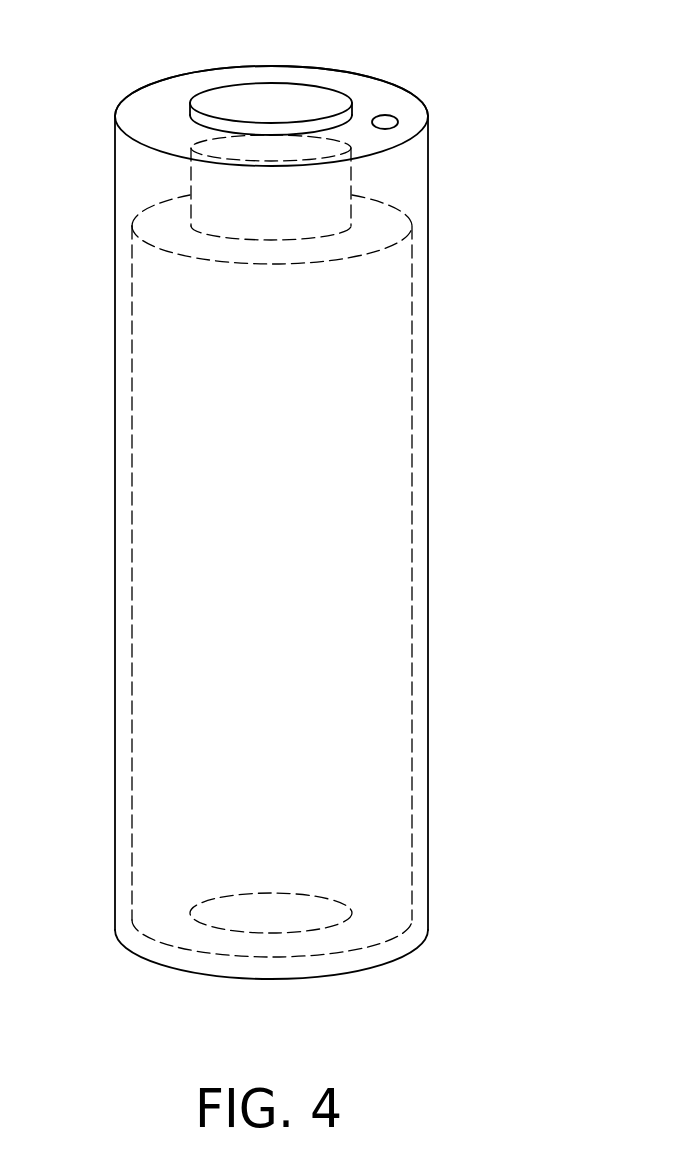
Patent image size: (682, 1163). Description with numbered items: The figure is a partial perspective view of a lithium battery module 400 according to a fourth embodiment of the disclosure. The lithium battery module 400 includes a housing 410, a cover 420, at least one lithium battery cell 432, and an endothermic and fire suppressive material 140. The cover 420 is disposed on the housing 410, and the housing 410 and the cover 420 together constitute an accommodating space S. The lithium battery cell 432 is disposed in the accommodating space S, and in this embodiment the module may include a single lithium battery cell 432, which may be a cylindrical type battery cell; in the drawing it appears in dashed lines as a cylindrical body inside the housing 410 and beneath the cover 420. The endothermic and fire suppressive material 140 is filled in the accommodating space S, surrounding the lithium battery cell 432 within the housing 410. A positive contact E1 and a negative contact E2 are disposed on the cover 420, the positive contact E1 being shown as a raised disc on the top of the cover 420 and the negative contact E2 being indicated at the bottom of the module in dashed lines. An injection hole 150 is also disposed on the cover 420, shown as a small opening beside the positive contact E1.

The lithium battery module 400 is at (575, 1016).
The housing 410 is at (428, 513).
The cover 420 is at (158, 108).
The lithium battery cell 432 is at (388, 560).
The endothermic and fire suppressive material 140 is at (415, 372).
The injection hole 150 is at (385, 115).
The positive contact E1 is at (272, 95).
The negative contact E2 is at (283, 932).
The accommodating space S is at (127, 435).